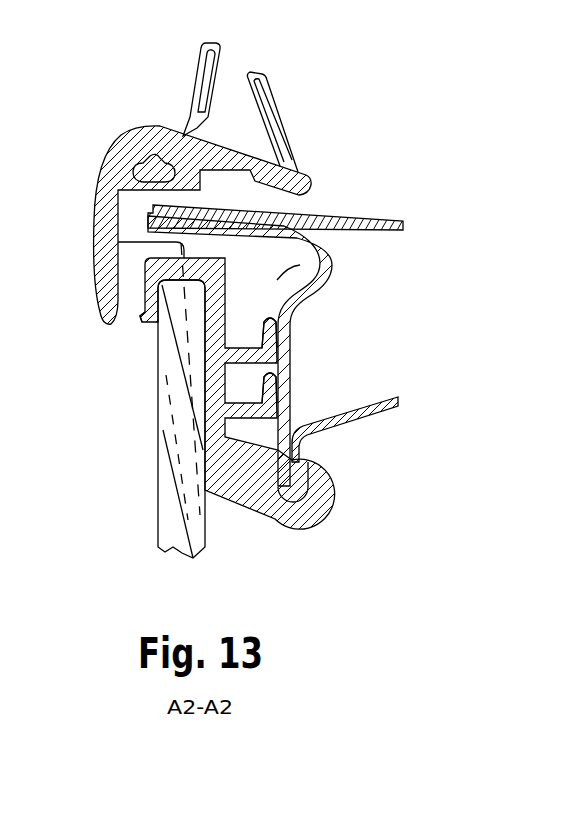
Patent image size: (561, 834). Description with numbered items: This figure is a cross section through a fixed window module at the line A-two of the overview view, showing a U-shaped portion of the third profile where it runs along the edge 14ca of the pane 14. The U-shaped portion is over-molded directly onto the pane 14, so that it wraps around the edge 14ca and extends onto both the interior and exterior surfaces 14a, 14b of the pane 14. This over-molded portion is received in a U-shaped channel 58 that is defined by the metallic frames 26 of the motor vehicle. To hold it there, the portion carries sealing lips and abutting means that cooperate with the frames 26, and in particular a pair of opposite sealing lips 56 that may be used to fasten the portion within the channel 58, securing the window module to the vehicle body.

The pane 14 is at (171, 436).
The interior surface 14a is at (158, 517).
The exterior surface 14b is at (165, 557).
The edge 14ca is at (165, 241).
The metallic frames 26 is at (364, 209).
The sealing lips 56 is at (290, 362).
The U-shaped channel 58 is at (325, 281).